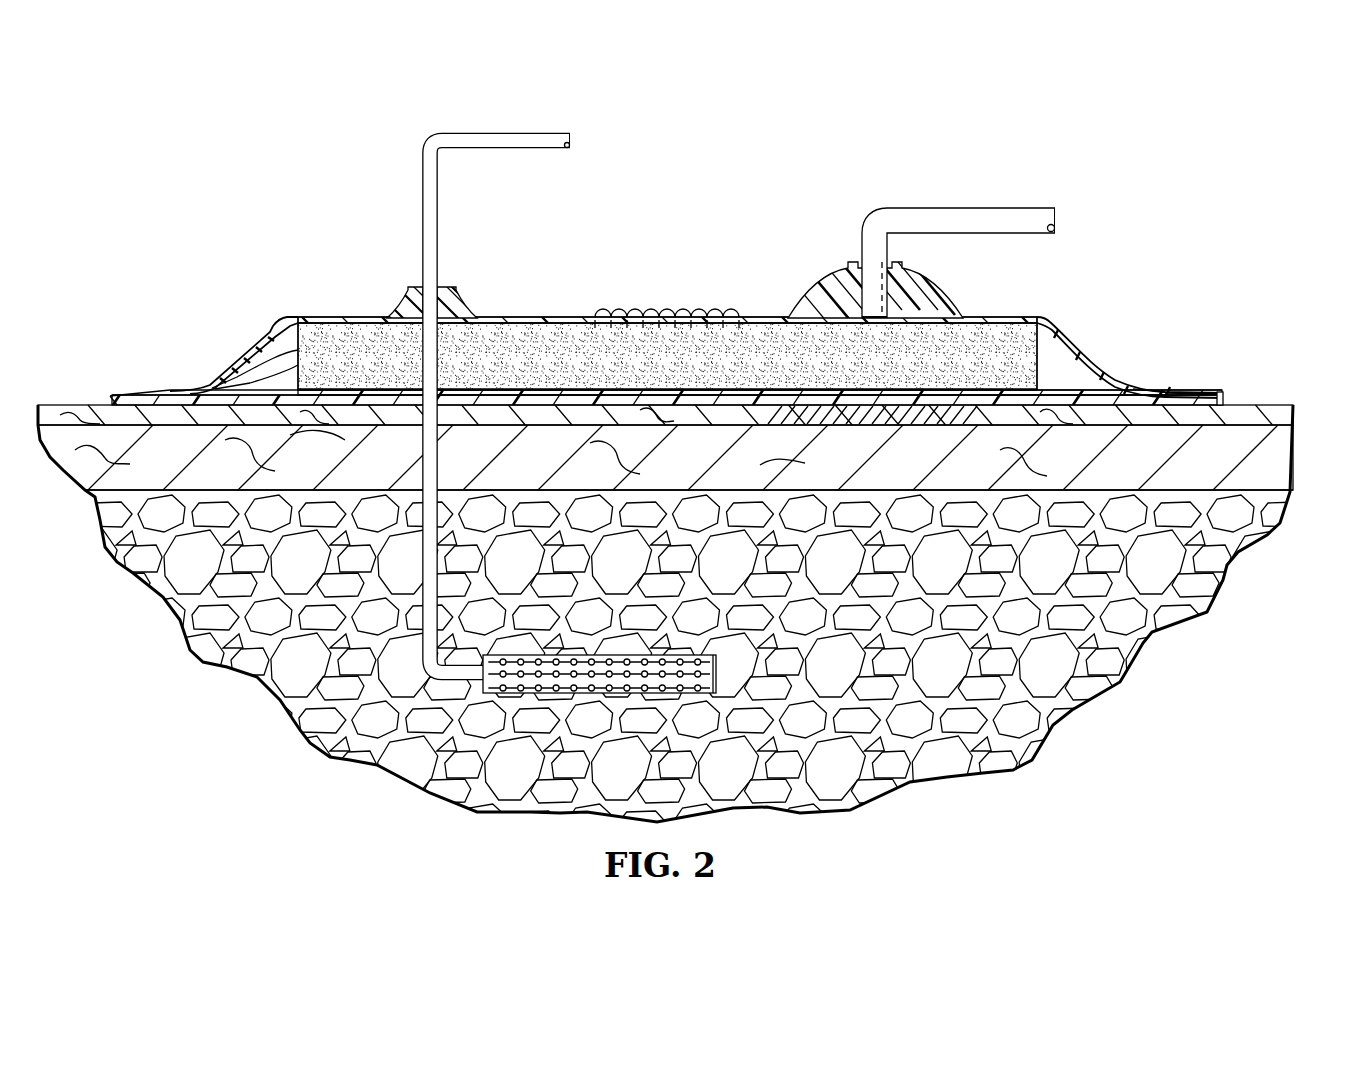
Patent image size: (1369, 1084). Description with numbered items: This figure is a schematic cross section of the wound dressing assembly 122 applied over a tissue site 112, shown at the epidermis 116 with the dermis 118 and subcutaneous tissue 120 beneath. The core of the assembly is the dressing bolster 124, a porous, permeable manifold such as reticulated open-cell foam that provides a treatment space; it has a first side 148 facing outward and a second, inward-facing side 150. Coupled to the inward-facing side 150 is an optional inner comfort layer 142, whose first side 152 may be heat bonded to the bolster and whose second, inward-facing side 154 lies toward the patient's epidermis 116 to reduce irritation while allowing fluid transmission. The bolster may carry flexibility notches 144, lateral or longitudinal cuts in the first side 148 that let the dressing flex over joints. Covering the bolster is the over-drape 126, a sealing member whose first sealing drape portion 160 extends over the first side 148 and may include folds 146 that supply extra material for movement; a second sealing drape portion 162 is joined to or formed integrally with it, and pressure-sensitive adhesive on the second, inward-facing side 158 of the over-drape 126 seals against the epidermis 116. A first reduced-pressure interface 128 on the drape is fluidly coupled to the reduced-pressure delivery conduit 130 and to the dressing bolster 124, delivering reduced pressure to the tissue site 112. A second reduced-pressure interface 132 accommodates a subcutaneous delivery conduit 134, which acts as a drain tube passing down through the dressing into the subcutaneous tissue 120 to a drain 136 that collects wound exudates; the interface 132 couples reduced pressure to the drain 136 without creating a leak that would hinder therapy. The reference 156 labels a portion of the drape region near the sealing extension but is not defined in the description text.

The tissue site 112 is at (882, 436).
The epidermis 116 is at (1285, 409).
The dermis 118 is at (1277, 460).
The subcutaneous tissue 120 is at (1210, 590).
The wound dressing assembly 122 is at (797, 156).
The dressing bolster 124 is at (690, 371).
The over-drape 126 is at (1075, 350).
The first reduced-pressure interface 128 is at (830, 280).
The reduced-pressure delivery conduit 130 is at (983, 208).
The second reduced-pressure interface 132 is at (400, 302).
The subcutaneous delivery conduit 134 is at (497, 133).
The drain 136 is at (585, 698).
The inner comfort layer 142 is at (272, 340).
The flexibility notches 144 is at (762, 318).
The folds 146 is at (677, 313).
The first side 148 is at (310, 390).
The second, inward-facing side 150 is at (373, 390).
The first side 152 is at (262, 374).
The second, inward-facing side 154 is at (295, 407).
The flat cover portion 156 is at (1152, 386).
The second, inward-facing side 158 is at (1220, 392).
The first sealing drape portion 160 is at (543, 315).
The second sealing drape portion 162 is at (1190, 388).